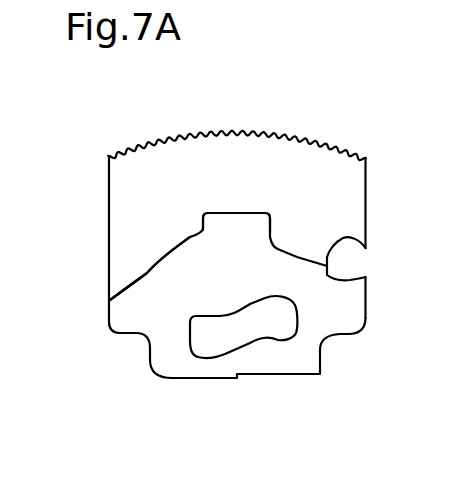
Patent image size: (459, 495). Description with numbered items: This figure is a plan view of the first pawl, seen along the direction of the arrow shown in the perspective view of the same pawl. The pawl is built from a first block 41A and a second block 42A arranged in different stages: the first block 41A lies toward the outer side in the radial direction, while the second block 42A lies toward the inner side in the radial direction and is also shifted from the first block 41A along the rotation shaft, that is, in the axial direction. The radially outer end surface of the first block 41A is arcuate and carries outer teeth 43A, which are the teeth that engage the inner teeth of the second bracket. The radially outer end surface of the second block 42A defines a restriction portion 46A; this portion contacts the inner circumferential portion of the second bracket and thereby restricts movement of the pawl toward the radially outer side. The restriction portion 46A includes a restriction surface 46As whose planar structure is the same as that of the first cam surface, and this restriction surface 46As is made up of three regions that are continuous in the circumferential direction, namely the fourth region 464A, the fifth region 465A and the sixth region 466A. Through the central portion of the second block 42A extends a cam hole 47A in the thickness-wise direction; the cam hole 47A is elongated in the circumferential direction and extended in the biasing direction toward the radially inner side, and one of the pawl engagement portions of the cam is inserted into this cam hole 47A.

The first block 41A is at (355, 185).
The second block 42A is at (342, 322).
The outer teeth 43A is at (272, 133).
The restriction portion 46A is at (217, 210).
The restriction surface 46As is at (119, 290).
The fourth region 464A is at (148, 275).
The fifth region 465A is at (277, 189).
The sixth region 466A is at (297, 257).
The cam hole 47A is at (231, 357).